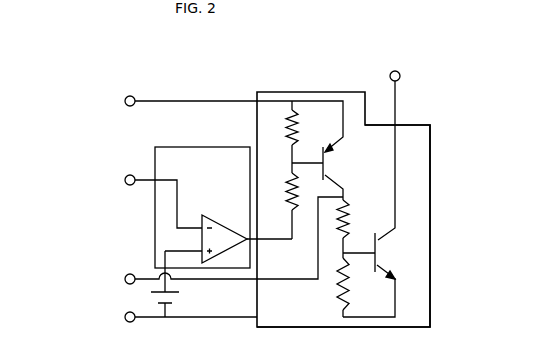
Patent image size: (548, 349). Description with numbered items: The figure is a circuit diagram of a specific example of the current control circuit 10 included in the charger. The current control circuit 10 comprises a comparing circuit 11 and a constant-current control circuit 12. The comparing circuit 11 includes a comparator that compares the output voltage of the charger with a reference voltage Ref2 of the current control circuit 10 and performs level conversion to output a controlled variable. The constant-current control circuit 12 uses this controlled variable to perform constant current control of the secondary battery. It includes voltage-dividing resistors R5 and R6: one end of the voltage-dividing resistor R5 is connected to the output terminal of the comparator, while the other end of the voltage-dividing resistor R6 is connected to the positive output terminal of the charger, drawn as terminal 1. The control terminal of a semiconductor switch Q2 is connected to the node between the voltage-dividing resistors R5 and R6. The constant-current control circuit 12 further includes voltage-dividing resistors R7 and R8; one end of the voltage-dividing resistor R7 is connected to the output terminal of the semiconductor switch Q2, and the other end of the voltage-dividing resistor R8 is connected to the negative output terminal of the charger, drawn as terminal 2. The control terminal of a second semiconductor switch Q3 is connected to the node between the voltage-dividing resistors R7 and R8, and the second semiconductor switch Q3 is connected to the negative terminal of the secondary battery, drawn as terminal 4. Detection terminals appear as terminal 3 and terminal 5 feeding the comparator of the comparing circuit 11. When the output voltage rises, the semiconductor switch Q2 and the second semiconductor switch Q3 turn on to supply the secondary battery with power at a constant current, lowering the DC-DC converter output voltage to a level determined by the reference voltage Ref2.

The output terminal Vo+ 1 is at (204, 115).
The output terminal Vo- 2 is at (161, 317).
The sense terminal SENS1 3 is at (122, 192).
The battery negative terminal BATT- 4 is at (383, 133).
The sense terminal SENS3 5 is at (191, 243).
The current control circuit 10 is at (195, 131).
The comparing circuit 11 is at (237, 174).
The constant-current control circuit 12 is at (424, 155).
The voltage-dividing resistor R5 is at (305, 137).
The voltage-dividing resistor R6 is at (280, 201).
The voltage-dividing resistor R7 is at (356, 229).
The voltage-dividing resistor R8 is at (327, 287).
The semiconductor switch Q2 is at (325, 173).
The second semiconductor switch Q3 is at (375, 275).
The reference voltage Ref2 is at (183, 304).